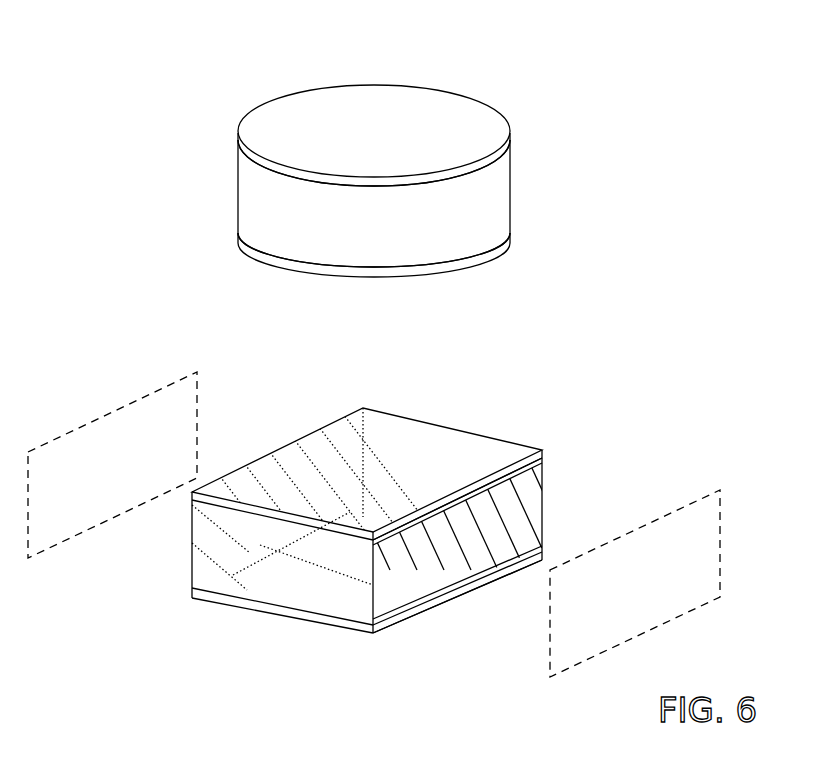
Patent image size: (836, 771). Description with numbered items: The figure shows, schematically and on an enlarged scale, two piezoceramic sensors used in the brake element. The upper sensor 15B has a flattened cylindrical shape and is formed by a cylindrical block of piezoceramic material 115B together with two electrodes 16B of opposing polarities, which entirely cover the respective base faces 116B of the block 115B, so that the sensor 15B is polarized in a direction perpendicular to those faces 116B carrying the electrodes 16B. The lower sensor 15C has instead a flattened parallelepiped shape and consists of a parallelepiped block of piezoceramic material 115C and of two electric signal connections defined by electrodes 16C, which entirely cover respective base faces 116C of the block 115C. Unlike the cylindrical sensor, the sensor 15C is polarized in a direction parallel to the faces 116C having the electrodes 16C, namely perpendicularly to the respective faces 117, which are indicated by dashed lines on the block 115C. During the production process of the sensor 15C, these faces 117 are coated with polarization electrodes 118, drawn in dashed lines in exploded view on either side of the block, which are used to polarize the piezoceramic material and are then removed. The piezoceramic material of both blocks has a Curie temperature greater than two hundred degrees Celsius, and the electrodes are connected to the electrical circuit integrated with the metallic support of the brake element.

The piezoceramic sensor 15B is at (360, 161).
The cylindrical block of piezoceramic material 115B is at (248, 187).
The electrodes 16B is at (508, 157).
The base faces 116B is at (263, 150).
The piezoceramic sensor 15C is at (343, 538).
The parallelepiped block of piezoceramic material 115C is at (277, 590).
The electrodes 16C is at (320, 705).
The base faces 116C is at (552, 450).
The faces 117 is at (192, 548).
The polarization electrodes 118 is at (76, 426).